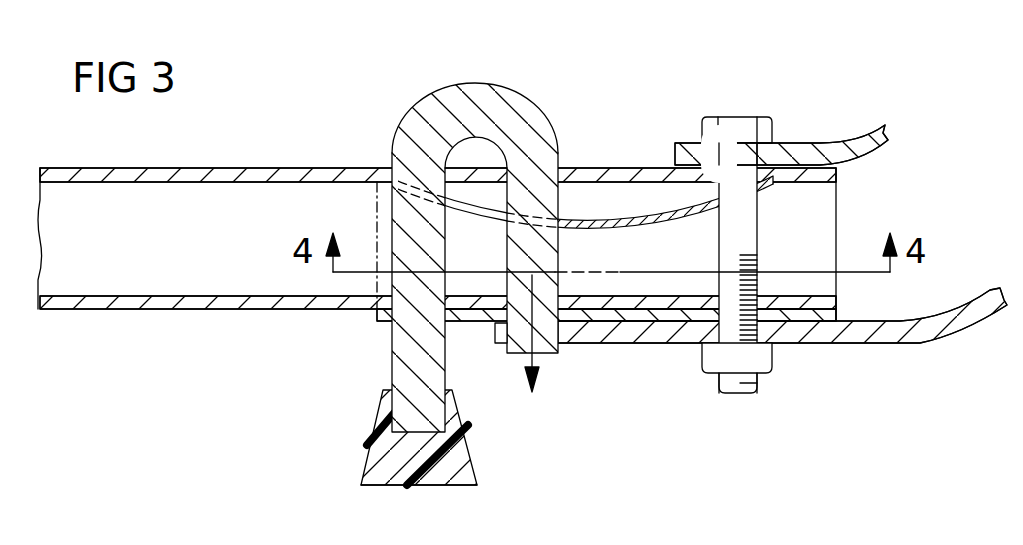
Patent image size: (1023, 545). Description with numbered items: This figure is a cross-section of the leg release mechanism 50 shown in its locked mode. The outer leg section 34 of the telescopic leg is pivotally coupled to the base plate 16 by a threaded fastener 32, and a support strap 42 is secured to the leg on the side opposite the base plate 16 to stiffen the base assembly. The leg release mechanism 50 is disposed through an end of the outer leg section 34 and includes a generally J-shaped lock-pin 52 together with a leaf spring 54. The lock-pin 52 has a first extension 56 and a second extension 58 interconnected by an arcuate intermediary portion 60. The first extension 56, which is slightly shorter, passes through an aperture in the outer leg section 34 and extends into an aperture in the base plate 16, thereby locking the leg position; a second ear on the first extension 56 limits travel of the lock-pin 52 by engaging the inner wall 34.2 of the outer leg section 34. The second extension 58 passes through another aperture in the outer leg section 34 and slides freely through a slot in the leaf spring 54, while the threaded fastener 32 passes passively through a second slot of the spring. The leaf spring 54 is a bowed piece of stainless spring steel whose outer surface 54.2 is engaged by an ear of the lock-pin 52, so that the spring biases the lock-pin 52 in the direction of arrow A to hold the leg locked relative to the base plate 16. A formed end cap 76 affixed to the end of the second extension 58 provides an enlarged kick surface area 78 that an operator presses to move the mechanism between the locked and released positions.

The base plate 16 is at (627, 336).
The threaded fastener 32 is at (761, 127).
The outer leg section 34 is at (215, 178).
The inner wall 34.2 is at (228, 296).
The support strap 42 is at (865, 140).
The leg release mechanism 50 is at (366, 123).
The lock-pin 52 is at (541, 93).
The leaf spring 54 is at (596, 216).
The outer surface 54.2 is at (623, 232).
The first extension 56 is at (548, 328).
The second extension 58 is at (402, 350).
The arcuate intermediary portion 60 is at (455, 95).
The end cap 76 is at (373, 463).
The kick surface area 78 is at (386, 505).
The arrow A is at (530, 358).